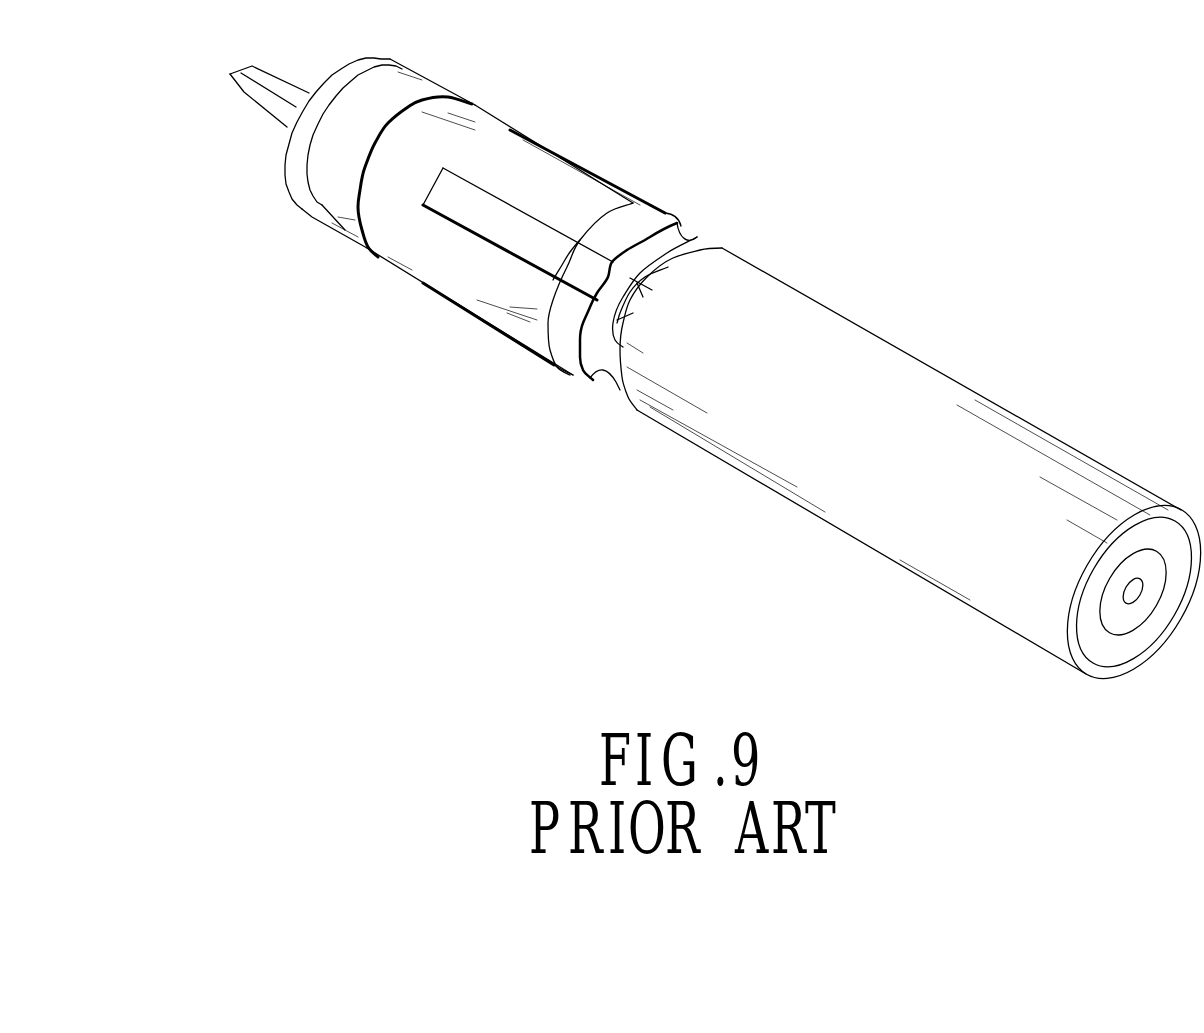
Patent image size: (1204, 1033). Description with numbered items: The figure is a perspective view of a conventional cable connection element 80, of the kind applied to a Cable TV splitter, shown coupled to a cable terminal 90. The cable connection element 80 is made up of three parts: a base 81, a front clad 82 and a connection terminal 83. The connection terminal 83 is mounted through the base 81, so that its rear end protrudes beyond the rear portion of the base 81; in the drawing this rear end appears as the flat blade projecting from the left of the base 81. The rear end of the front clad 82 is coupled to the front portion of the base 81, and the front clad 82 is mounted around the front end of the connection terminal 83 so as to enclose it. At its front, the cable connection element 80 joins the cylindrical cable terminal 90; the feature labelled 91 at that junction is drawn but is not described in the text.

The cable connection element 80 is at (432, 333).
The base 81 is at (425, 88).
The front clad 82 is at (530, 155).
The connection terminal 83 is at (250, 113).
The cable terminal 90 is at (1005, 393).
The retaining ring 91 is at (690, 238).